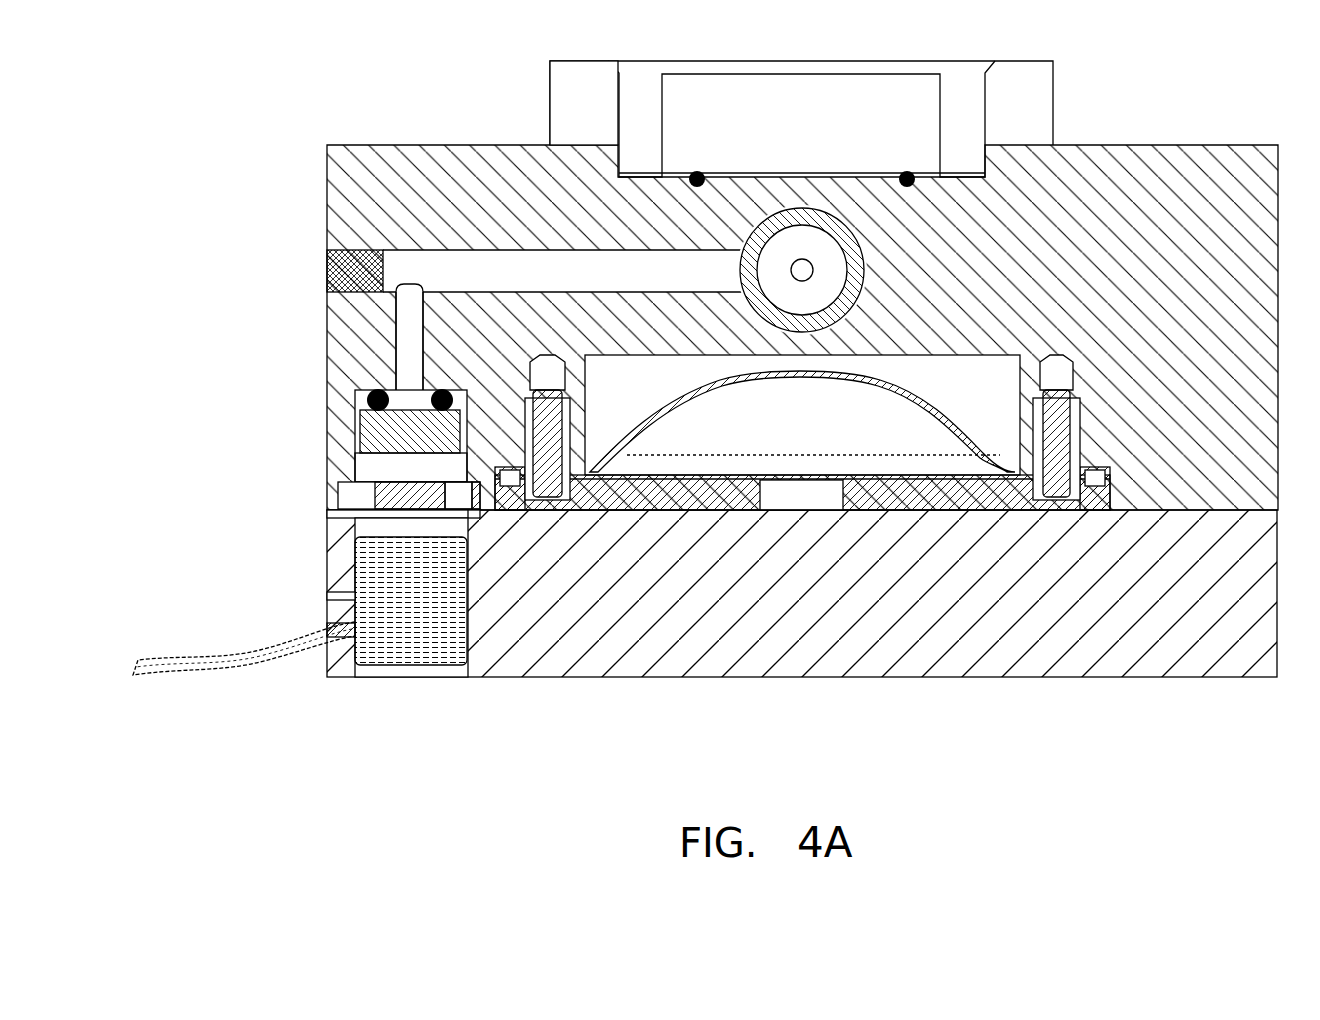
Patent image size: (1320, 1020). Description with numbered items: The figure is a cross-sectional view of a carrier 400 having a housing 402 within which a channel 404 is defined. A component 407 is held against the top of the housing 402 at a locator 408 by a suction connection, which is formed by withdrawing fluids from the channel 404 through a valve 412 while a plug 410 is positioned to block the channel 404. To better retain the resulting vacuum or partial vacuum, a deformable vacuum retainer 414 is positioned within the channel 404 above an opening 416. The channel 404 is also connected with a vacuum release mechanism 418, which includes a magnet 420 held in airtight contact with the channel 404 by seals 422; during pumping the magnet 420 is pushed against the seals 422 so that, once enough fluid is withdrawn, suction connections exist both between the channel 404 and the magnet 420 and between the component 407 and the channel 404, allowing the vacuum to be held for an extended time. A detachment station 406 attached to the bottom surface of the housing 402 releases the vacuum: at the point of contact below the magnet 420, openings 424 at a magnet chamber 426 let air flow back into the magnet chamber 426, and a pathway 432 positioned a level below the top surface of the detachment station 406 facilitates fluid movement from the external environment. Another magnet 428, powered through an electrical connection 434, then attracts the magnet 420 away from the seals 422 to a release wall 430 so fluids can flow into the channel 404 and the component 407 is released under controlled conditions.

The carrier 400 is at (700, 392).
The housing 402 is at (321, 160).
The channel 404 is at (536, 246).
The detachment station 406 is at (345, 684).
The component 407 is at (801, 96).
The locator 408 is at (632, 58).
The plug 410 is at (327, 266).
The valve 412 is at (842, 214).
The vacuum retainer 414 is at (950, 430).
The opening 416 is at (820, 510).
The vacuum release mechanism 418 is at (371, 383).
The magnet 420 is at (360, 433).
The seals 422 is at (440, 385).
The openings 424 is at (350, 497).
The magnet chamber 426 is at (355, 466).
The magnet 428 is at (358, 603).
The release wall 430 is at (452, 498).
The pathway 432 is at (380, 518).
The electrical connection 434 is at (140, 660).